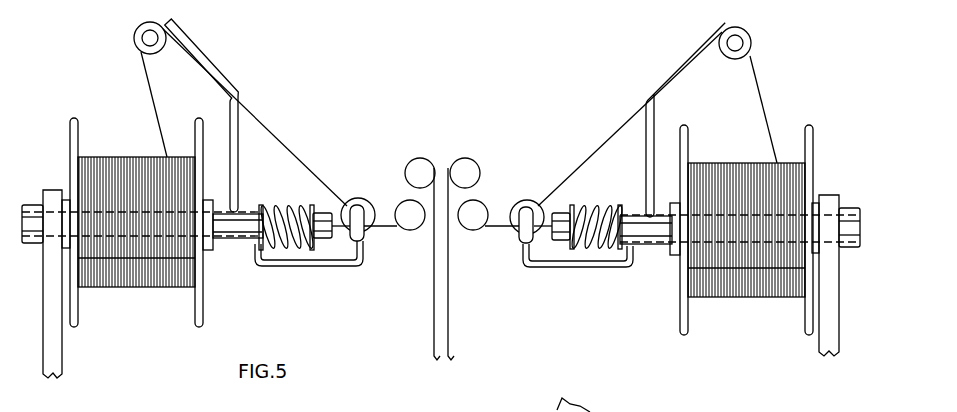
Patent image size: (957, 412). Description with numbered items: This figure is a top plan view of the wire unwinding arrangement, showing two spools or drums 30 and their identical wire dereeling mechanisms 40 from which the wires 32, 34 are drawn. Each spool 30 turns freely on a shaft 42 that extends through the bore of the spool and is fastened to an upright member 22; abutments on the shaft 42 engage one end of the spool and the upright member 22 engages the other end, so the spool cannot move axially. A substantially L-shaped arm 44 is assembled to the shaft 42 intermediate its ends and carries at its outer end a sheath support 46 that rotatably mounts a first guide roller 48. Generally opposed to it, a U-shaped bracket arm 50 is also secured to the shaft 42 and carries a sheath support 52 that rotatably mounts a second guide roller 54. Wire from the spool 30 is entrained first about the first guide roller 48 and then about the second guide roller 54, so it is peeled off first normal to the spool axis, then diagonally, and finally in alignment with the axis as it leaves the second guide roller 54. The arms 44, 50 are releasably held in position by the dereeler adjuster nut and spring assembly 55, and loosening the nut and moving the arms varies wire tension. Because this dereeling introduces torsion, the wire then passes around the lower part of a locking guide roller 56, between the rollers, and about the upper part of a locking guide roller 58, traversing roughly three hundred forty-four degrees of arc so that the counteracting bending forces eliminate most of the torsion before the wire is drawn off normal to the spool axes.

The upright member 22 is at (60, 358).
The spool 30 is at (80, 318).
The wire 32 is at (449, 353).
The wire 34 is at (433, 343).
The wire dereeling mechanism 40 is at (359, 150).
The shaft 42 is at (232, 246).
The L-shaped arm 44 is at (218, 69).
The sheath support 46 is at (143, 42).
The first guide roller 48 is at (136, 36).
The U-shaped bracket arm 50 is at (260, 268).
The sheath support 52 is at (362, 242).
The second guide roller 54 is at (355, 198).
The dereeler adjuster nut and spring assembly 55 is at (268, 196).
The locking guide roller 56 is at (409, 224).
The locking guide roller 58 is at (421, 163).